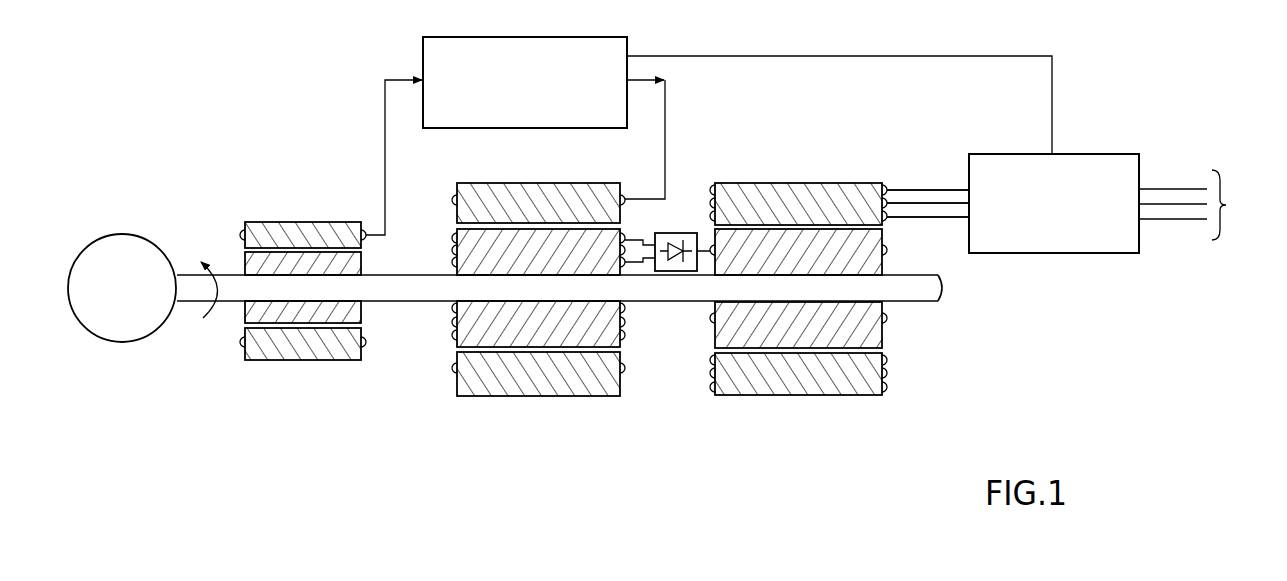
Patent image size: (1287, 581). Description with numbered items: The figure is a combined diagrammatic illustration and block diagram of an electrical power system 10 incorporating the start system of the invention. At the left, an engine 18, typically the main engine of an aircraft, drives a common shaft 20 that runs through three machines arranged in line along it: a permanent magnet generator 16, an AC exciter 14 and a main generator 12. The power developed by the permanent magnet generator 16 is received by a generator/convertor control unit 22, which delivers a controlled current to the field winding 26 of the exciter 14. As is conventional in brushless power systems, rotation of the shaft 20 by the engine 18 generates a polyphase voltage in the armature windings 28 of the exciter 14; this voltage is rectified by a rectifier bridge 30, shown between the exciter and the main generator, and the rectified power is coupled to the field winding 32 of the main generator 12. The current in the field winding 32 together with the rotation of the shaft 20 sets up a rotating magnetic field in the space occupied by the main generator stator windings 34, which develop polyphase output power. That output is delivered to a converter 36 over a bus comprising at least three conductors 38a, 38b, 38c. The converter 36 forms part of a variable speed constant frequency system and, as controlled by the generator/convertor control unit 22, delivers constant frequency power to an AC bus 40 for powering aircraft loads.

The electrical power system 10 is at (424, 508).
The main generator 12 is at (817, 406).
The AC exciter 14 is at (593, 402).
The permanent magnet generator 16 is at (321, 367).
The engine 18 is at (138, 234).
The common shaft 20 is at (181, 303).
The generator/convertor control unit 22 is at (478, 130).
The field winding 26 is at (621, 196).
The armature windings 28 is at (441, 247).
The rectifier bridge 30 is at (673, 232).
The field winding 32 is at (892, 251).
The main generator stator windings 34 is at (698, 194).
The converter 36 is at (1101, 154).
The conductor 38a is at (900, 188).
The conductor 38b is at (928, 204).
The conductor 38c is at (955, 219).
The AC bus 40 is at (1248, 168).